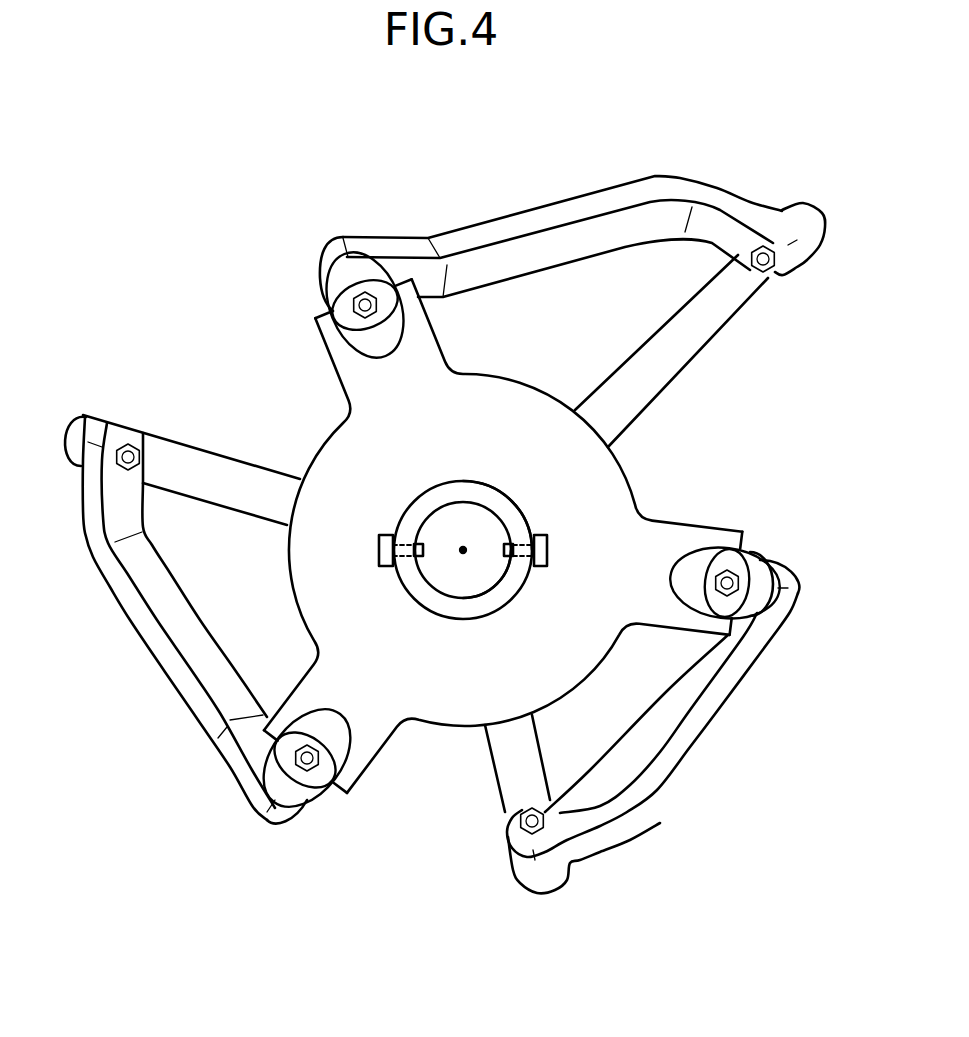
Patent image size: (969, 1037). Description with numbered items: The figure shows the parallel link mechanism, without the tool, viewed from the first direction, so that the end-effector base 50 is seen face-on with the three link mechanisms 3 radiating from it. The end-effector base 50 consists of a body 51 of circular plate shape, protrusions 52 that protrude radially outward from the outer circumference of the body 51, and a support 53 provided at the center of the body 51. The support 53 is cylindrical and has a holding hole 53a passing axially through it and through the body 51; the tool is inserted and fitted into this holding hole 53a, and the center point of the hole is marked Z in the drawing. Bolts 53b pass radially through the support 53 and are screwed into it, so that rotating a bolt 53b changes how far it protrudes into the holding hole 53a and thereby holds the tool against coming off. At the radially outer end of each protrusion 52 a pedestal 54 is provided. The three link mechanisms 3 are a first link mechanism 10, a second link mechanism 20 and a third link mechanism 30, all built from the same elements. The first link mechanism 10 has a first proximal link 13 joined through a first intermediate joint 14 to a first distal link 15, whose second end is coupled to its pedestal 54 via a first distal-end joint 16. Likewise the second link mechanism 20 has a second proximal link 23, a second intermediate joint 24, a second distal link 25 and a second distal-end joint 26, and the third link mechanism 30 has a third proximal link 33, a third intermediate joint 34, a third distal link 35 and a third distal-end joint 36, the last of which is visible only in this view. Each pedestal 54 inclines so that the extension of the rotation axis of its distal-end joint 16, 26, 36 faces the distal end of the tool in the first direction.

The link mechanisms 3 is at (437, 509).
The third link mechanism 30 is at (572, 286).
The third distal link 35 is at (620, 193).
The third proximal link 33 is at (672, 370).
The third intermediate joint 34 is at (766, 276).
The third distal-end joint 36 is at (365, 293).
The second link mechanism 20 is at (190, 590).
The second distal link 25 is at (128, 597).
The second proximal link 23 is at (195, 463).
The second intermediate joint 24 is at (135, 445).
The second distal-end joint 26 is at (290, 760).
The first link mechanism 10 is at (635, 712).
The first distal link 15 is at (687, 710).
The first proximal link 13 is at (513, 765).
The first intermediate joint 14 is at (549, 822).
The first distal-end joint 16 is at (733, 573).
The end-effector base 50 is at (543, 563).
The body 51 is at (525, 402).
The protrusions 52 is at (420, 338).
The support 53 is at (410, 523).
The holding hole 53a is at (483, 571).
The bolts 53b is at (548, 551).
The pedestals 54 is at (330, 306).
The central axis Z is at (460, 551).